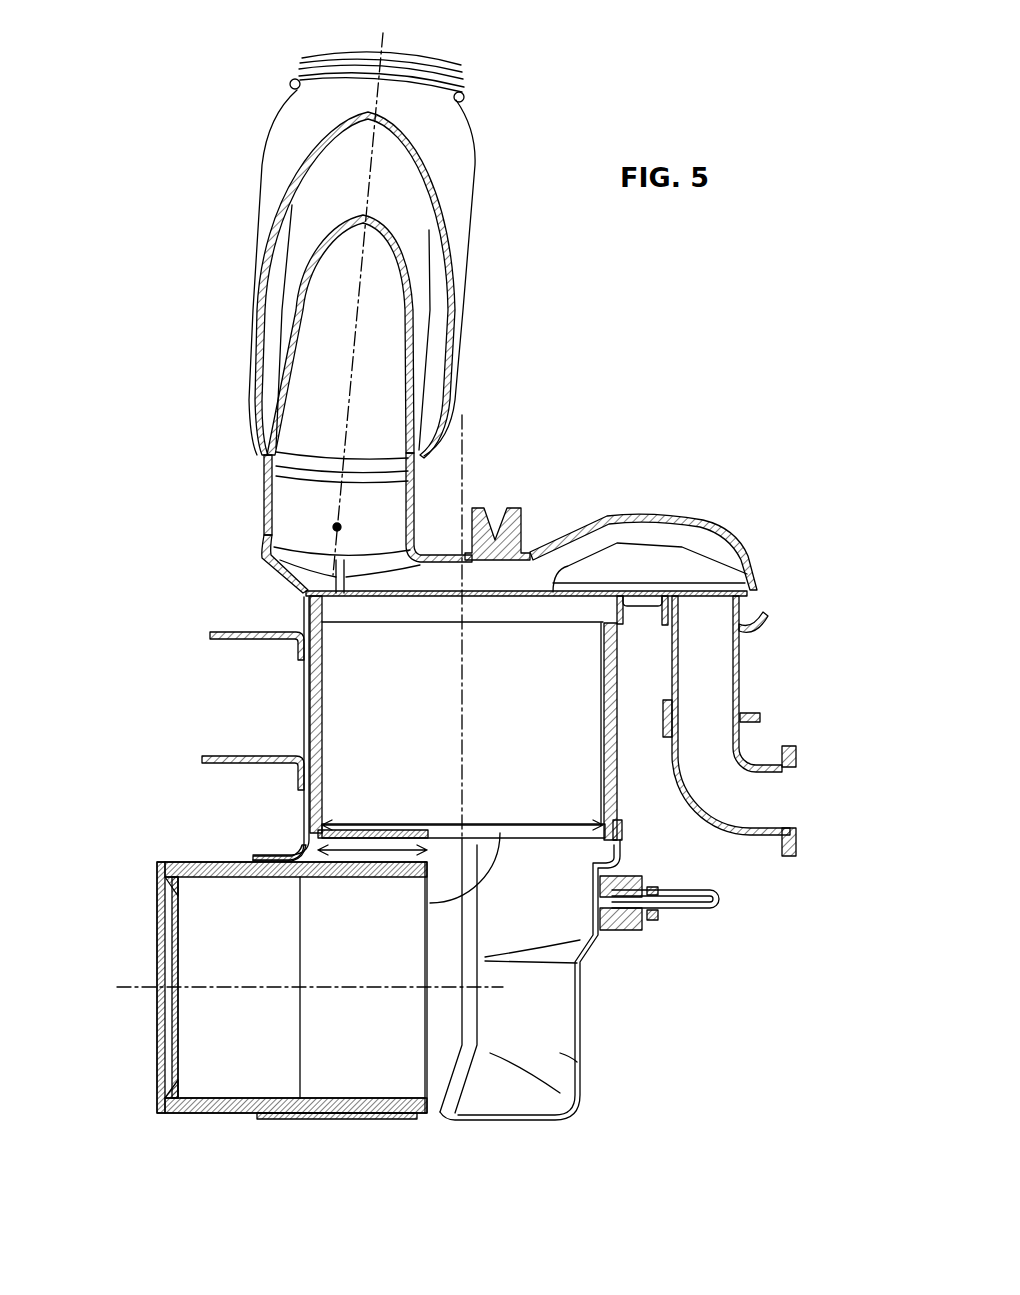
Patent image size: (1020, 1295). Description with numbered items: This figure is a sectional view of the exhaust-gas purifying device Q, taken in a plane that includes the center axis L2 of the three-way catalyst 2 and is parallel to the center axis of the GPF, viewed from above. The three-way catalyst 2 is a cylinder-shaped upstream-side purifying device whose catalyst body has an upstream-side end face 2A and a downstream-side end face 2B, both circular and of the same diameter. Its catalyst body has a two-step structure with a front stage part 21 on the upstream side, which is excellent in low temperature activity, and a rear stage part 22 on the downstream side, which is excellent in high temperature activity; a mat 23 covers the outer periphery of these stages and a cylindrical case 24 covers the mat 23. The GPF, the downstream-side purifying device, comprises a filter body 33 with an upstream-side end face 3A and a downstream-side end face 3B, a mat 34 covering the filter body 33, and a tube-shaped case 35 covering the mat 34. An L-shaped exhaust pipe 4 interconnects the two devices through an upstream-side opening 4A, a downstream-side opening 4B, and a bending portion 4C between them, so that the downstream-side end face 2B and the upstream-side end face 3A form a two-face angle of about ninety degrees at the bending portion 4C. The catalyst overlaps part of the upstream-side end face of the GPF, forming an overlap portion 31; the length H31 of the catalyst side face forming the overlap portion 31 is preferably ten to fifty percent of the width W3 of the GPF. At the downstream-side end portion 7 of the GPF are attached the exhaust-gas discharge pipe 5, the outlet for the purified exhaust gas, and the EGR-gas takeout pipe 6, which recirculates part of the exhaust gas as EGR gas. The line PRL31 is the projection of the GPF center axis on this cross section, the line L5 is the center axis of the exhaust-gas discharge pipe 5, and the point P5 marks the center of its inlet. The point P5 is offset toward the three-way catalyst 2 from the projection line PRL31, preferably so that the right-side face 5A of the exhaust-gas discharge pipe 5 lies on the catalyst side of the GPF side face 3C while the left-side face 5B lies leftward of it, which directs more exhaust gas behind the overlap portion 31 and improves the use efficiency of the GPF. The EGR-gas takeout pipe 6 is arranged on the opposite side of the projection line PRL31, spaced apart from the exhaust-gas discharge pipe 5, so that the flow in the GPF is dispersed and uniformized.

The exhaust-gas discharge pipe 5 is at (297, 426).
The center axis of the exhaust-gas discharge pipe L5 is at (350, 412).
The center of an inlet of the exhaust-gas discharge pipe P5 is at (333, 528).
The right-side face of the exhaust-gas discharge pipe 5A is at (266, 504).
The left-side face of the exhaust-gas discharge pipe 5B is at (410, 514).
The projection line of the center axis L3 PRL31 is at (466, 456).
The downstream-side end portion of the GPF 7 is at (601, 545).
The downstream-side end face of the filter body 3B is at (513, 622).
The GPF side face 3C is at (310, 698).
The filter body 33 is at (604, 643).
The mat 34 is at (615, 690).
The tube-shaped case 35 is at (619, 630).
The upstream-side end face of the filter body 3A is at (538, 838).
The overlap portion 31 is at (375, 832).
The width of the GPF W3 is at (462, 812).
The length of the side face of the three-way catalyst forming the overlap portion H31 is at (368, 858).
The EGR-gas takeout pipe 6 is at (739, 662).
The L-shaped exhaust pipe 4 is at (580, 1017).
The upstream-side opening 4A is at (253, 857).
The downstream-side opening 4B is at (304, 812).
The bending portion 4C is at (567, 1058).
The exhaust-gas purifying device Q is at (730, 972).
The three-way catalyst 2 is at (205, 1102).
The upstream-side end face of the catalyst body 2A is at (178, 957).
The downstream-side end face of the catalyst body 2B is at (427, 1037).
The center axis of the three-way catalyst L2 is at (120, 990).
The front stage part 21 is at (238, 1100).
The rear stage part 22 is at (373, 1097).
The mat 23 is at (290, 1113).
The cylindrical case 24 is at (325, 1119).